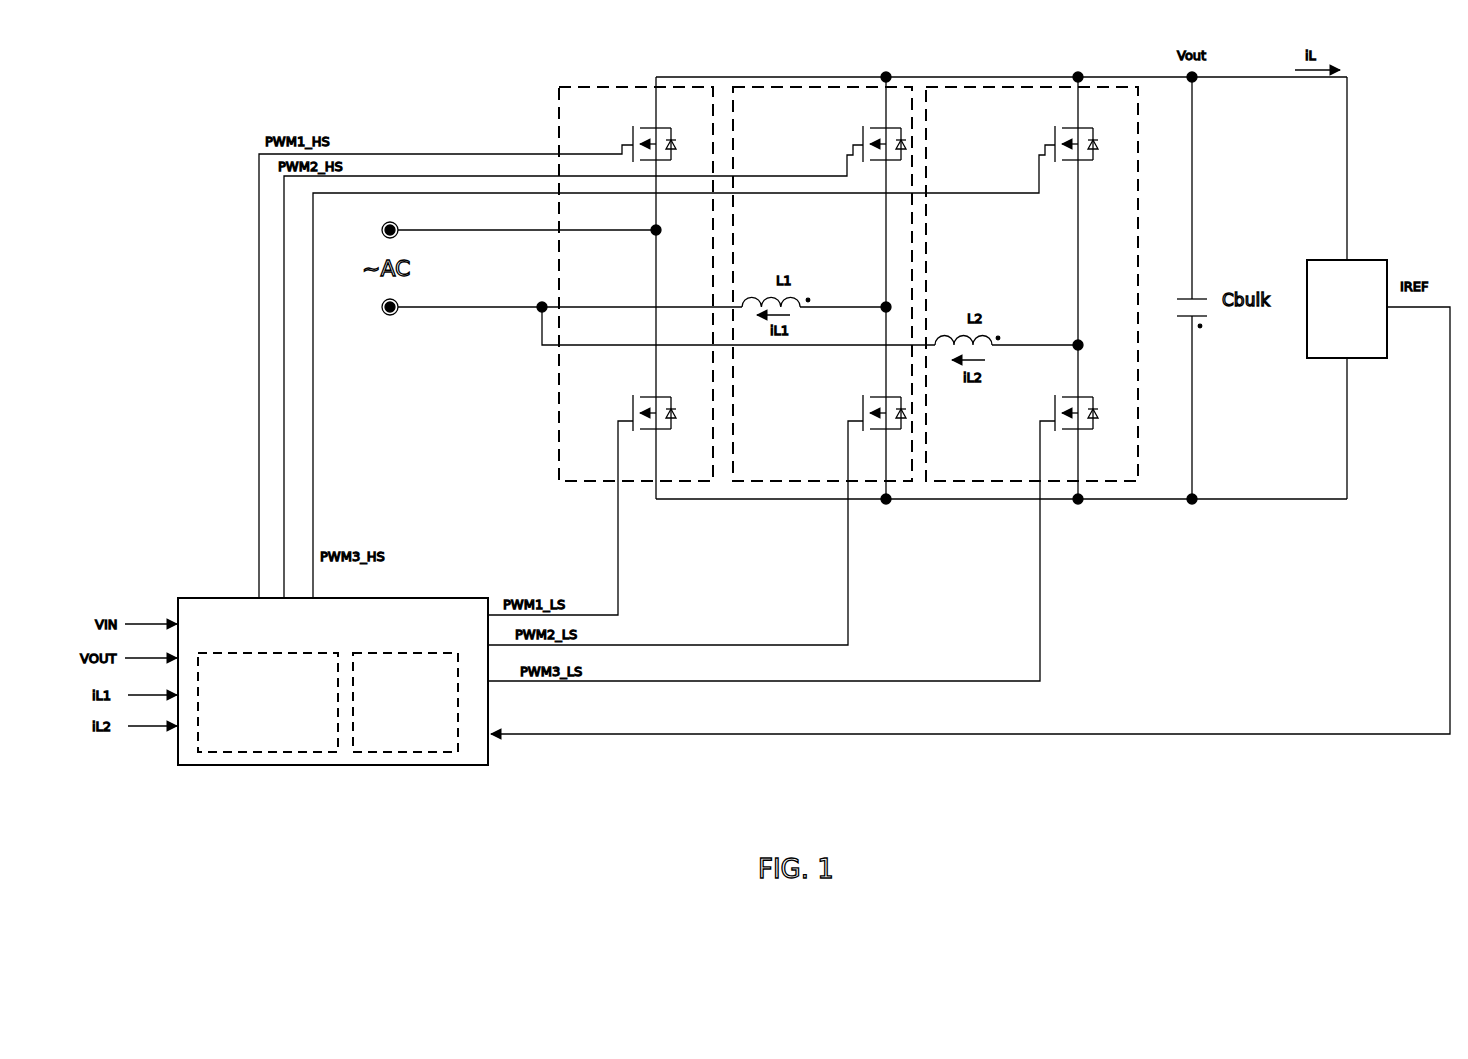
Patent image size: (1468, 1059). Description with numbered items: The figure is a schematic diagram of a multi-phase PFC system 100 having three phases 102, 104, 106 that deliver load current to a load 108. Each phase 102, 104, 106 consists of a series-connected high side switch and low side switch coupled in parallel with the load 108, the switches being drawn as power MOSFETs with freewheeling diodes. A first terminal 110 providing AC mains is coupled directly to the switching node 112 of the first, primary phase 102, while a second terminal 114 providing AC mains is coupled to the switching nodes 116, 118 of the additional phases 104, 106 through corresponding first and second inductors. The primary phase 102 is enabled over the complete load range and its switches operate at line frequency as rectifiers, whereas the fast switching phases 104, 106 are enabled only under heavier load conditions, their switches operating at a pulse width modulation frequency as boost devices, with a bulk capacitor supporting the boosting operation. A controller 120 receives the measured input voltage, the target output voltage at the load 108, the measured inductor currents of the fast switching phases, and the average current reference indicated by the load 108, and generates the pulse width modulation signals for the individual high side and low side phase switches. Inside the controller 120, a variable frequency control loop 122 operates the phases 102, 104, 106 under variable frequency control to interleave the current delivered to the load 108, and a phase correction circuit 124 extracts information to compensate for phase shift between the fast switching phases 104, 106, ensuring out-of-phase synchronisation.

The PFC system 100 is at (212, 63).
The first (primary) phase 102 is at (706, 112).
The second phase (first fast switching phase) 104 is at (771, 114).
The third phase (second fast switching phase) 106 is at (963, 114).
The load 108 is at (1360, 328).
The first terminal 110 is at (397, 224).
The switching node 112 is at (652, 236).
The second terminal 114 is at (394, 318).
The switching node 116 is at (880, 300).
The switching node 118 is at (1070, 339).
The controller 120 is at (333, 681).
The variable frequency control loop 122 is at (256, 741).
The phase correction circuit 124 is at (393, 744).